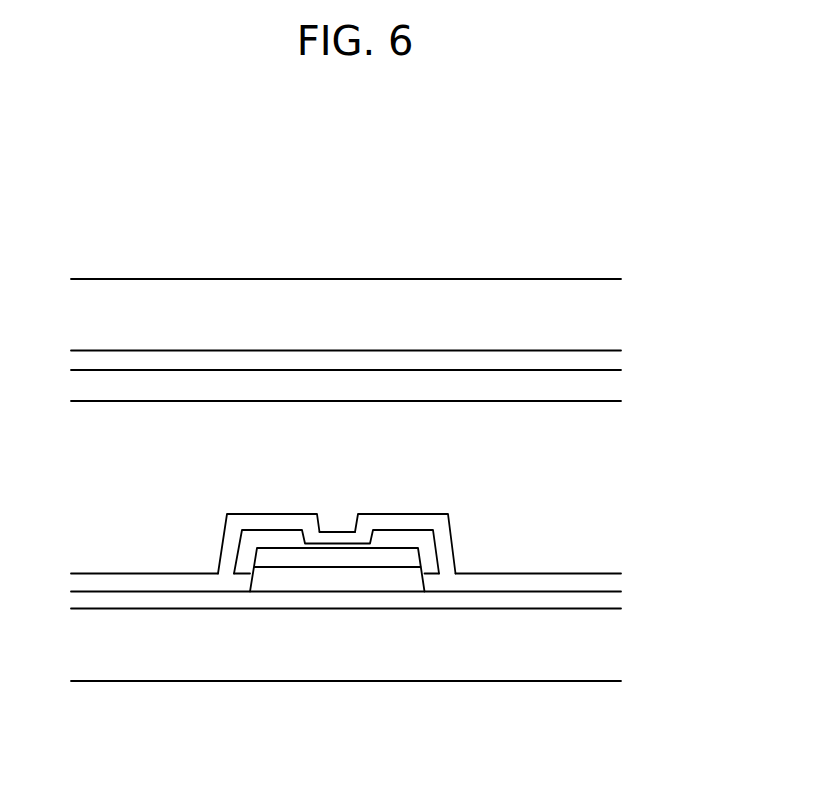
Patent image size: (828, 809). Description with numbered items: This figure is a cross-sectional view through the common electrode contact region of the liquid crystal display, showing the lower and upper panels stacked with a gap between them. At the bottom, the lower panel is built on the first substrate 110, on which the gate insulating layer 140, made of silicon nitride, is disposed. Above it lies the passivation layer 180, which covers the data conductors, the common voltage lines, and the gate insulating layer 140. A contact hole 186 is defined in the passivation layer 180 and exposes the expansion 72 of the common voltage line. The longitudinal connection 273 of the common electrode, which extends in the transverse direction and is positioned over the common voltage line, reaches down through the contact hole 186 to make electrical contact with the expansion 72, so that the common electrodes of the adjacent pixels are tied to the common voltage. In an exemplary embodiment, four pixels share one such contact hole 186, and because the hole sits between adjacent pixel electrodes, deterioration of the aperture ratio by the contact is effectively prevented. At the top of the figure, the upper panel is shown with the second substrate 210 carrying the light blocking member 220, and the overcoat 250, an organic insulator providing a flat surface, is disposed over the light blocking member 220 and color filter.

The expansion 72 is at (340, 556).
The first substrate 110 is at (612, 647).
The gate insulating layer 140 is at (612, 600).
The passivation layer 180 is at (610, 582).
The contact hole 186 is at (305, 540).
The longitudinal connection 273 is at (418, 522).
The second substrate 210 is at (498, 305).
The light blocking member 220 is at (383, 360).
The overcoat 250 is at (262, 387).